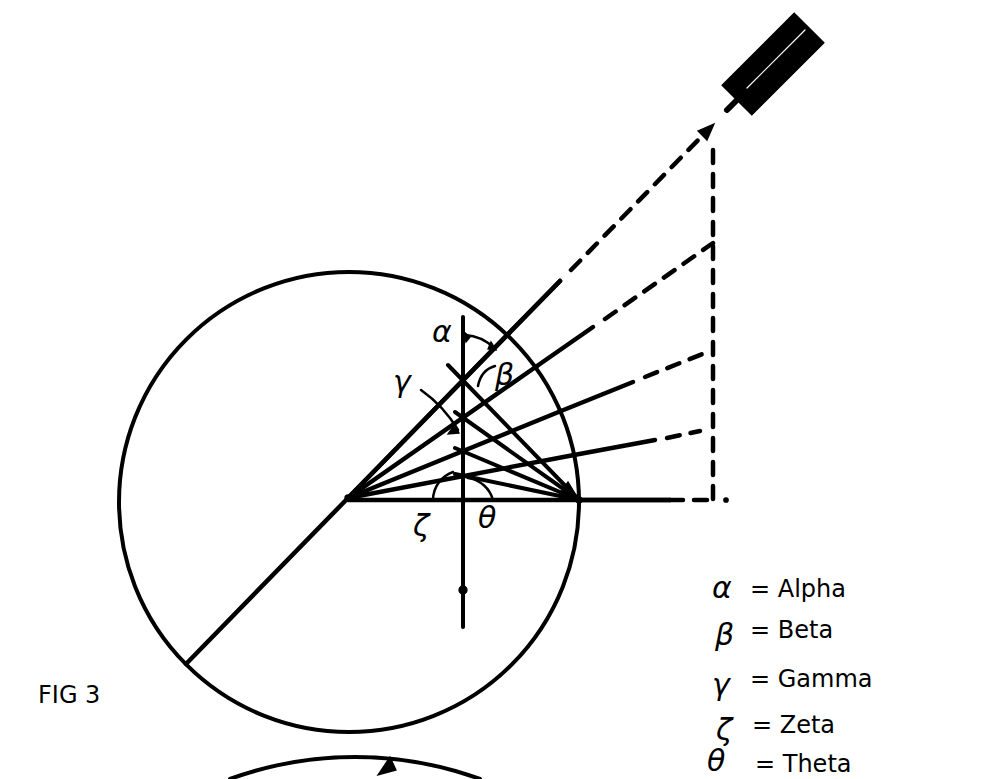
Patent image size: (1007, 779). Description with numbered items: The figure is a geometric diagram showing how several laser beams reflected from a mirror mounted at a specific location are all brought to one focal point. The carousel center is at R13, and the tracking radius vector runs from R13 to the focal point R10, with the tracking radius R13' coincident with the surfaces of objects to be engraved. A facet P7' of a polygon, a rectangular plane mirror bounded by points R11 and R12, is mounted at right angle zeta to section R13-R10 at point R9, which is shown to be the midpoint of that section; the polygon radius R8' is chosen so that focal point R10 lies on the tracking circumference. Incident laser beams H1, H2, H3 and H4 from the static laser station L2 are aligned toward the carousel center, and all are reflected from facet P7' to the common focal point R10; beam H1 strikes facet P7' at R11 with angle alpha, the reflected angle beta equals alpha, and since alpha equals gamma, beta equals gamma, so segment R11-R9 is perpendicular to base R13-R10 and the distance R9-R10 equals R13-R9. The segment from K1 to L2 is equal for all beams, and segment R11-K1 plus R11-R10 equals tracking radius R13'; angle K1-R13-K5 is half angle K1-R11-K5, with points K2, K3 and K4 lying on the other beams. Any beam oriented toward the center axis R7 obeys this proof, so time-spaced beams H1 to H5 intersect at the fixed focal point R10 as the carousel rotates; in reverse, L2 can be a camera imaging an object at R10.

The laser station L2 is at (786, 92).
The incident laser beam H1 is at (611, 312).
The incident laser beam H2 is at (625, 304).
The incident laser beam H3 is at (633, 384).
The incident laser beam H4 is at (637, 455).
The laser beam H5 is at (643, 521).
The beam point K1 is at (430, 392).
The beam point K2 is at (450, 412).
The beam point K3 is at (468, 434).
The beam point K4 is at (475, 456).
The beam point K5 is at (595, 486).
The center axis R7 is at (342, 490).
The polygon radius R8' is at (441, 389).
The mounting point R9 is at (460, 505).
The focal point R10 is at (567, 507).
The facet boundary point R11 is at (452, 376).
The facet boundary point R12 is at (455, 591).
The carousel center R13 is at (360, 536).
The tracking radius R13' is at (267, 581).
The polygon facet P7' is at (412, 635).